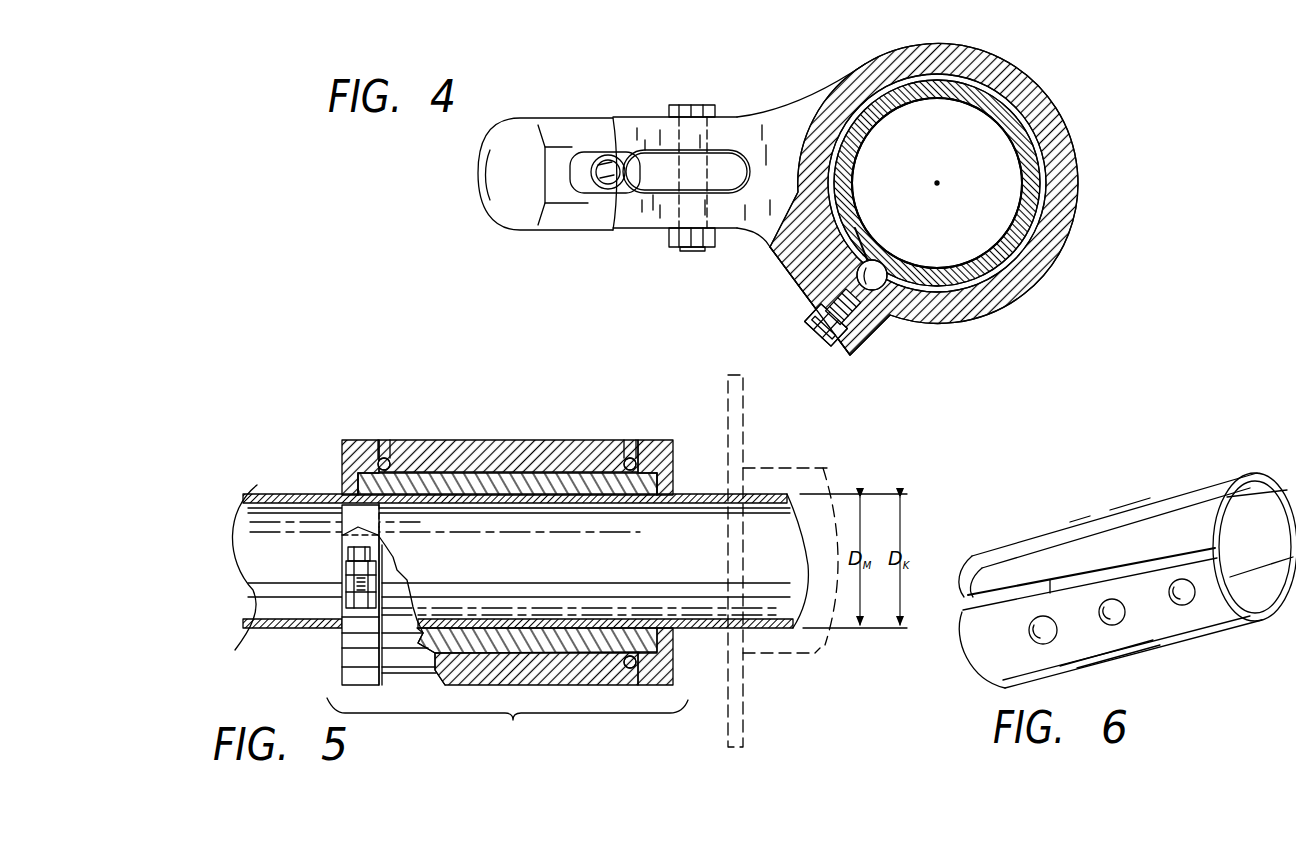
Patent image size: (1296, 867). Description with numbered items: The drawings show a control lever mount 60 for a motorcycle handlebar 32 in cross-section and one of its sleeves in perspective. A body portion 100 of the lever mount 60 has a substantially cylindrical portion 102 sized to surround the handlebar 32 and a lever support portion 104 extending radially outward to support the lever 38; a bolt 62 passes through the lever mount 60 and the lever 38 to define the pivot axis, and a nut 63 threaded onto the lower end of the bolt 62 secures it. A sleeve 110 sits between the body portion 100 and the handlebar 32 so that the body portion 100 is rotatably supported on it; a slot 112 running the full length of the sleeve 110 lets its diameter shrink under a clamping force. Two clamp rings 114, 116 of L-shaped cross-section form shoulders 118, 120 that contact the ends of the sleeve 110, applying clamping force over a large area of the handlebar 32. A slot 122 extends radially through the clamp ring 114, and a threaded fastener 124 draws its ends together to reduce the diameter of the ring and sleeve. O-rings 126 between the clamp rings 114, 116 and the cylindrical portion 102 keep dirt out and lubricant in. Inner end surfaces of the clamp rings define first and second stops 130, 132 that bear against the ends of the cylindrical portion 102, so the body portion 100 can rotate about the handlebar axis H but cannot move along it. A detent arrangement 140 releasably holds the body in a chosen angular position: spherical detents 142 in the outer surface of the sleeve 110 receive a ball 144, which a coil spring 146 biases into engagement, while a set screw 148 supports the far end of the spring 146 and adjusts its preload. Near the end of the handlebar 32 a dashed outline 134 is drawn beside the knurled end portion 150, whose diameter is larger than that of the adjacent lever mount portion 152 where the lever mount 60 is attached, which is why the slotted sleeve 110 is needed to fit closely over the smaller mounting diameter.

In FIG. 4, the handlebar 32 is at (897, 108).
In FIG. 5, the handlebar 32 is at (500, 507).
In FIG. 4, the lever 38 is at (527, 150).
In FIG. 4, the lever mount 60 is at (1097, 71).
In FIG. 4, the bolt 62 is at (697, 105).
In FIG. 4, the nut 63 is at (683, 250).
In FIG. 4, the body portion 100 is at (1017, 44).
In FIG. 5, the body portion 100 is at (470, 391).
In FIG. 4, the cylindrical portion 102 is at (862, 68).
In FIG. 5, the cylindrical portion 102 is at (455, 440).
In FIG. 4, the lever support portion 104 is at (632, 228).
In FIG. 4, the sleeve 110 is at (1045, 115).
In FIG. 5, the sleeve 110 is at (413, 488).
In FIG. 6, the sleeve 110 is at (1116, 486).
In FIG. 4, the slot 112 is at (858, 226).
In FIG. 6, the slot 112 is at (975, 613).
In FIG. 5, the clamp ring 114 is at (347, 440).
In FIG. 5, the clamp ring 116 is at (660, 440).
In FIG. 5, the shoulder 118 is at (356, 476).
In FIG. 5, the shoulder 120 is at (667, 472).
In FIG. 5, the slot 122 is at (344, 582).
In FIG. 5, the threaded fastener 124 is at (350, 553).
In FIG. 5, the O-ring 126 is at (387, 457).
In FIG. 5, the first stop 130 is at (379, 440).
In FIG. 5, the second stop 132 is at (632, 440).
In FIG. 5, the tube end contour 134 is at (836, 428).
In FIG. 4, the detent arrangement 140 is at (858, 362).
In FIG. 4, the detent 142 is at (888, 265).
In FIG. 6, the detent 142 is at (1183, 601).
In FIG. 4, the ball 144 is at (857, 273).
In FIG. 4, the spring 146 is at (874, 322).
In FIG. 4, the set screw 148 is at (815, 318).
In FIG. 5, the knurled end portion 150 is at (747, 490).
In FIG. 5, the lever mount portion 152 is at (507, 722).
In FIG. 4, the handlebar axis H is at (940, 181).